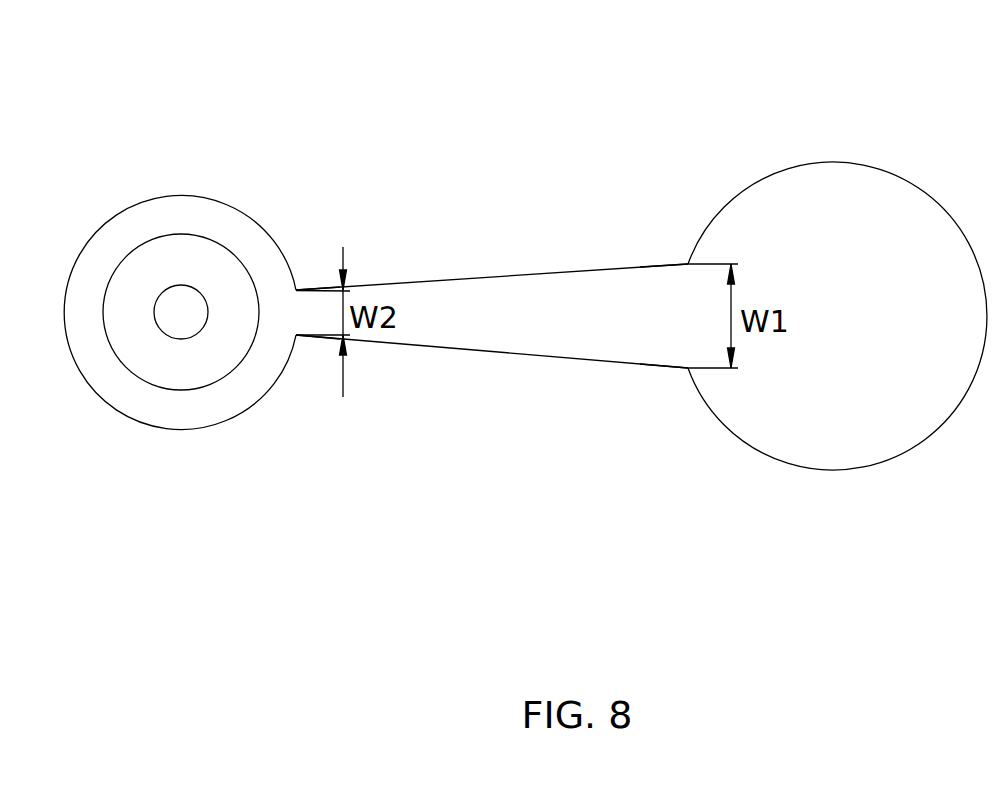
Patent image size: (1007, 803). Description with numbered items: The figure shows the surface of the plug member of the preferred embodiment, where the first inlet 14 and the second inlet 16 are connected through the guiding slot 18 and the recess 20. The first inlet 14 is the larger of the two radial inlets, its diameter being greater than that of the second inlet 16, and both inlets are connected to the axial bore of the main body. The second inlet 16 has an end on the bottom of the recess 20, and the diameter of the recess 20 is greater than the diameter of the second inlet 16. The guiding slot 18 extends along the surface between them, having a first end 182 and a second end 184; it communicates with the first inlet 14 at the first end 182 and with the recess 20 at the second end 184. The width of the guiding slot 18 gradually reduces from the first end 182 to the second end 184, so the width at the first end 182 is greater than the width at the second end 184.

The first inlet 14 is at (813, 417).
The second inlet 16 is at (181, 285).
The guiding slot 18 is at (497, 318).
The first end 182 is at (667, 330).
The second end 184 is at (295, 315).
The recess 20 is at (188, 412).